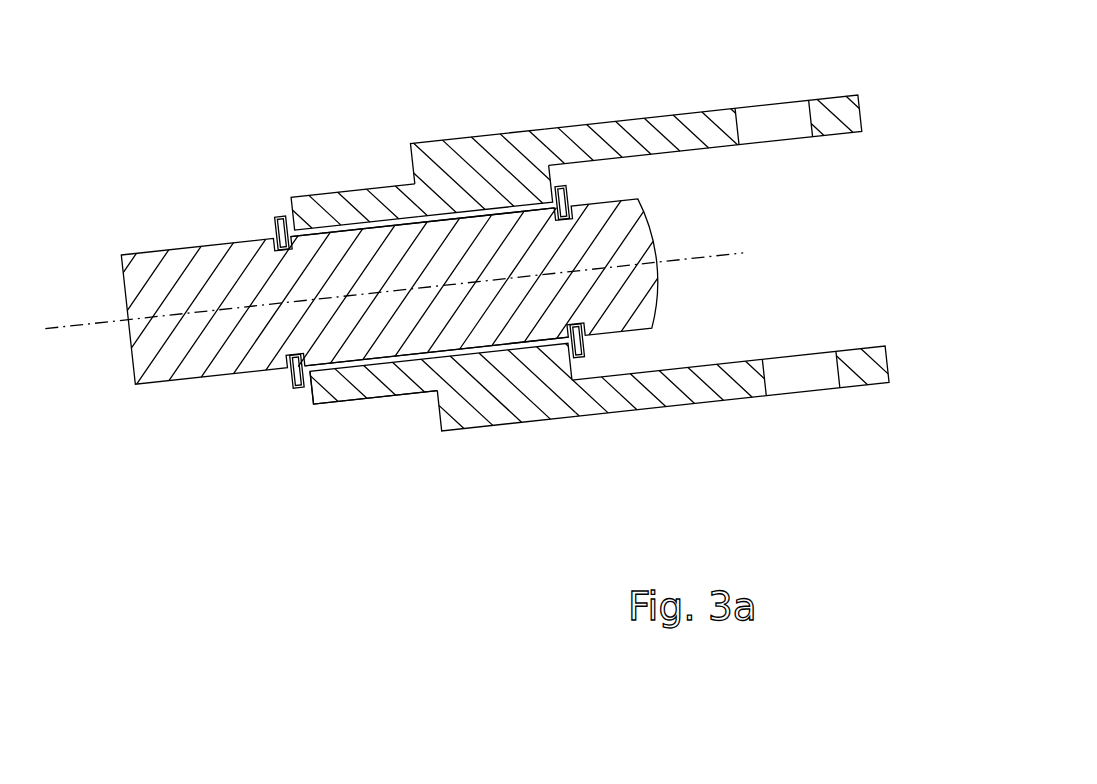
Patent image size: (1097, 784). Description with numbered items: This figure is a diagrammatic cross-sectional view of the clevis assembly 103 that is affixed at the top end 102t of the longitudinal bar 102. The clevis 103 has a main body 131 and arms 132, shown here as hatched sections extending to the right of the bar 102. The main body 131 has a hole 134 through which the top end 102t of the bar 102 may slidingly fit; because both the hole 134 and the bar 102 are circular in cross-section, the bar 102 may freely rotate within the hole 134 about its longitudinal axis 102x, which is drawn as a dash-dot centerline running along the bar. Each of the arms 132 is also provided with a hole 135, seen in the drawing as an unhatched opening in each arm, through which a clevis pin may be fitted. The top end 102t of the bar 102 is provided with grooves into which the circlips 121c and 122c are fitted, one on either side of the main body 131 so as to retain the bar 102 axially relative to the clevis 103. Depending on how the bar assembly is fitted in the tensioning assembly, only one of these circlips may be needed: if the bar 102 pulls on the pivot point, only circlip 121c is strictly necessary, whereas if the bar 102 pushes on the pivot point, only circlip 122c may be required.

The longitudinal bar 102 is at (228, 238).
The top end of the bar 102t is at (418, 333).
The longitudinal axis 102x is at (432, 282).
The clevis assembly 103 is at (330, 452).
The circlip 121c is at (583, 347).
The circlip 122c is at (292, 383).
The main body 131 is at (383, 207).
The arms 132 is at (842, 348).
The hole 134 is at (496, 205).
The hole 135 is at (809, 99).